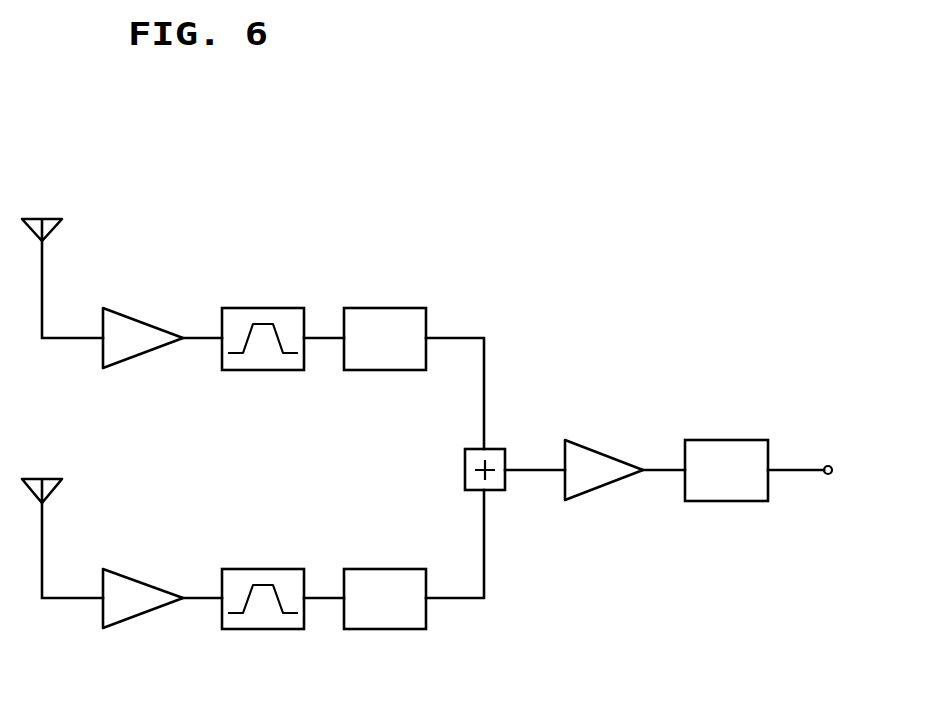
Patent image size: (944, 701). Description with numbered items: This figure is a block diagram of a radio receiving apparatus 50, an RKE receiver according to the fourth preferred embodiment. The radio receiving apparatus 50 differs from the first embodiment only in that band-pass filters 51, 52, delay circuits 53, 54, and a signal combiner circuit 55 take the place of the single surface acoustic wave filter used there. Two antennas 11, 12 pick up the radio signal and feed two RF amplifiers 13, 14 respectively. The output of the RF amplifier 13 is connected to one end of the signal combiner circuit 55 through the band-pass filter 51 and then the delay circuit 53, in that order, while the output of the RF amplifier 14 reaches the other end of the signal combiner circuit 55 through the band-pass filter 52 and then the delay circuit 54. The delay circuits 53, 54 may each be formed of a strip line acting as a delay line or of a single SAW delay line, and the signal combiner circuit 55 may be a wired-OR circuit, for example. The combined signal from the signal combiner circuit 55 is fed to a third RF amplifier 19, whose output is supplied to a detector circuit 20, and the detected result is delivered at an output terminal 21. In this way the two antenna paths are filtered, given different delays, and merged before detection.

The radio receiving apparatus 50 is at (650, 224).
The antenna 11 is at (47, 222).
The antenna 12 is at (50, 482).
The RF amplifier 13 is at (133, 338).
The RF amplifier 14 is at (133, 598).
The band-pass filter 51 is at (258, 315).
The band-pass filter 52 is at (258, 575).
The delay circuit 53 is at (380, 315).
The delay circuit 54 is at (378, 575).
The signal combiner circuit 55 is at (493, 457).
The RF amplifier 19 is at (595, 468).
The detector circuit 20 is at (720, 455).
The output terminal 21 is at (829, 462).